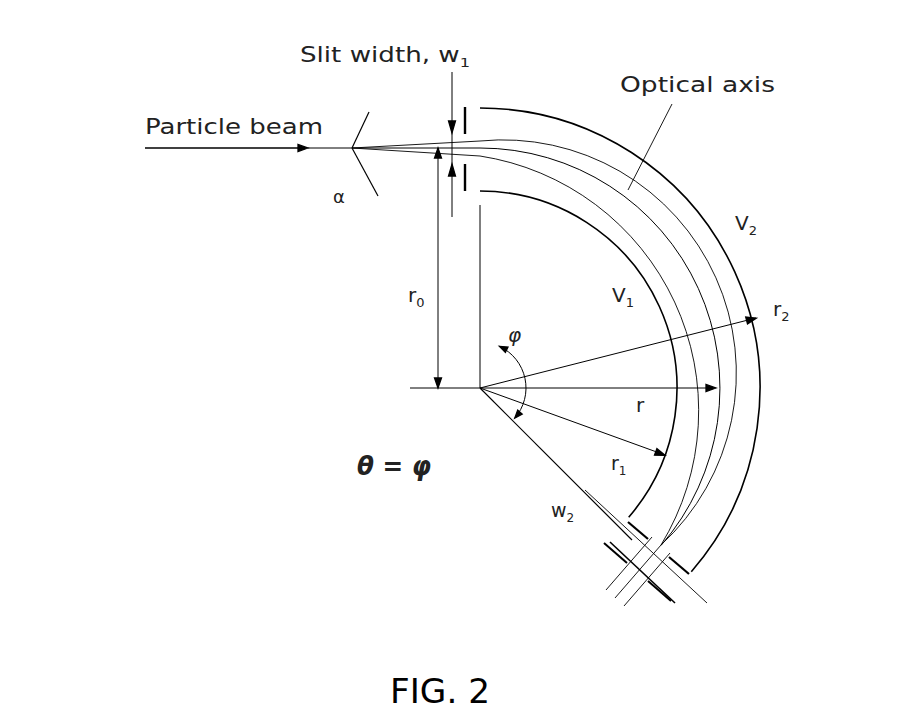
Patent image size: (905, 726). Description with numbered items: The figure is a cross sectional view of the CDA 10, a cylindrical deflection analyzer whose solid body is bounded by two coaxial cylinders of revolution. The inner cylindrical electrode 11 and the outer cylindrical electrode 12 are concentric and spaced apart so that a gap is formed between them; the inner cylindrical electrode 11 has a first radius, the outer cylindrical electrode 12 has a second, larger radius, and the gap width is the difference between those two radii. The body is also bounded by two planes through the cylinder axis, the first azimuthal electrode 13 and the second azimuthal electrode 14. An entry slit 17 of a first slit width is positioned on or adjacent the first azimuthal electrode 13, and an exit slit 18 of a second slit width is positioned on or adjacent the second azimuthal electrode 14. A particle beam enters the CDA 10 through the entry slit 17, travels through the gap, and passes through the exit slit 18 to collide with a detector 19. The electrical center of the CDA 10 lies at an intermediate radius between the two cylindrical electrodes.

The CDA 10 is at (150, 66).
The inner cylindrical electrode 11 is at (606, 243).
The outer cylindrical electrode 12 is at (690, 197).
The first azimuthal electrode 13 is at (482, 222).
The second azimuthal electrode 14 is at (562, 466).
The entry slit 17 is at (467, 134).
The exit slit 18 is at (668, 557).
The detector 19 is at (642, 594).